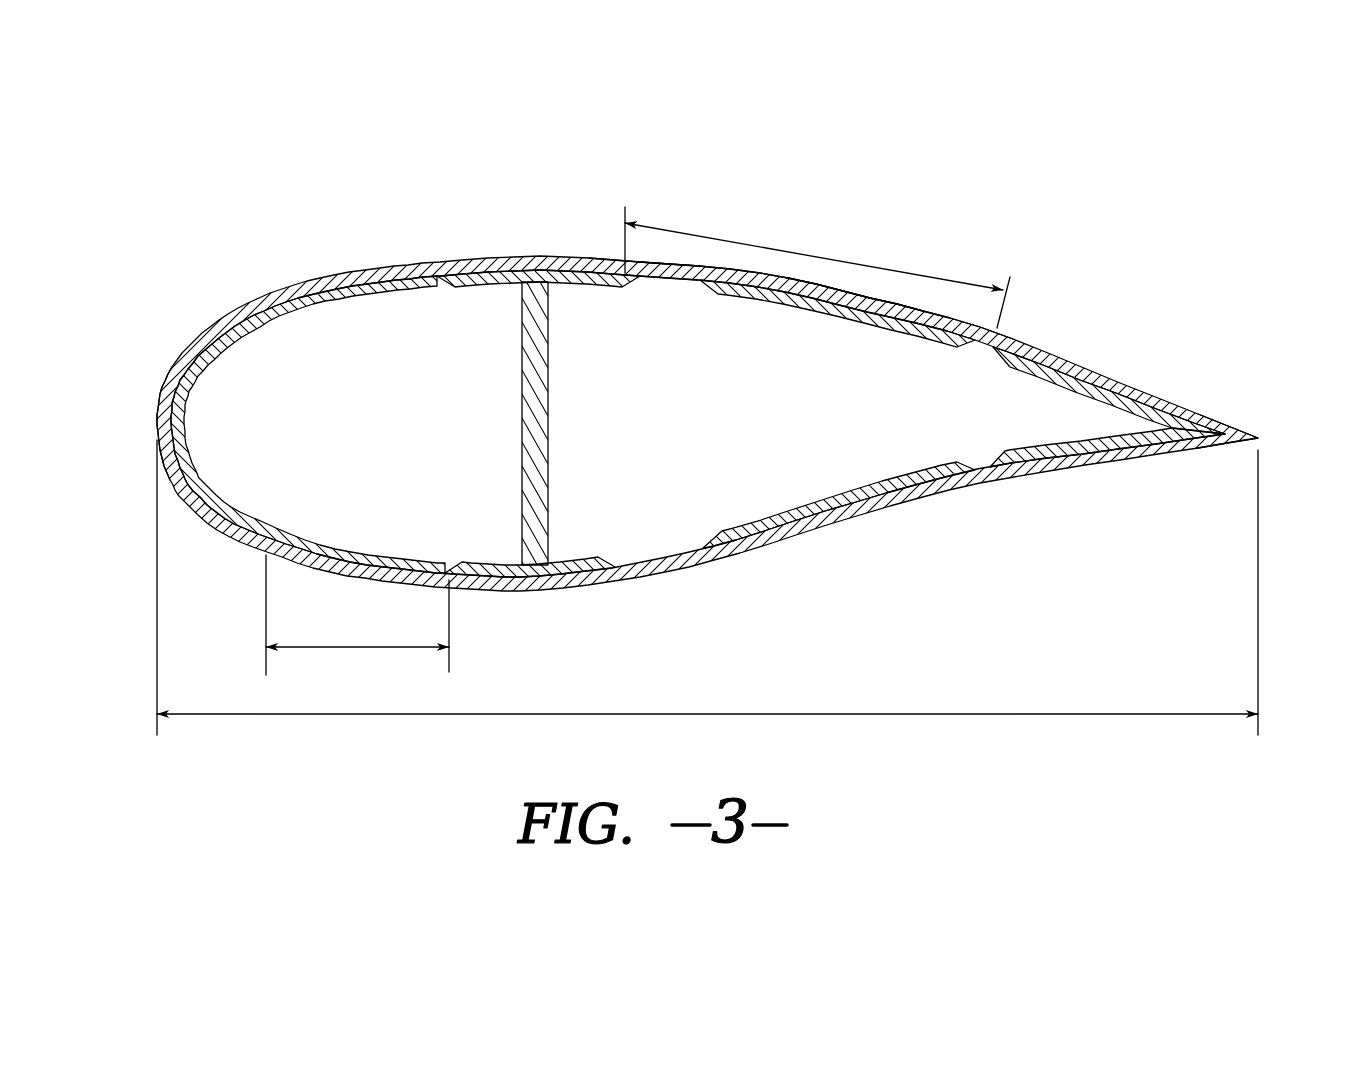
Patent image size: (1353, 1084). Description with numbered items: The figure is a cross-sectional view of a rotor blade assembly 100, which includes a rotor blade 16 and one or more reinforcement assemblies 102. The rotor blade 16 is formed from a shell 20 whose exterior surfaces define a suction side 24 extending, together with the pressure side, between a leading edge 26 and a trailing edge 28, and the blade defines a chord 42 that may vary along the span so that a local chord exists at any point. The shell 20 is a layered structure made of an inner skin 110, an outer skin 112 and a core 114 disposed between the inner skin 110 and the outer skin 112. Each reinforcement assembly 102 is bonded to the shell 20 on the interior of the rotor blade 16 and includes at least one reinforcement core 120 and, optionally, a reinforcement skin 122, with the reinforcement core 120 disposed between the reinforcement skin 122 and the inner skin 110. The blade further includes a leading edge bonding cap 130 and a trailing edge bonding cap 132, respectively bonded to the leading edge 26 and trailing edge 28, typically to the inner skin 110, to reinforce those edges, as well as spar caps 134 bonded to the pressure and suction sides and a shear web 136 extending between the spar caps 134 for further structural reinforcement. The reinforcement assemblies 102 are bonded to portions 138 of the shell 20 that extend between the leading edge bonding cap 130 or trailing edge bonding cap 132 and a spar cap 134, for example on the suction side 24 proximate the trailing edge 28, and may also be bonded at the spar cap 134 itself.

The rotor blade 16 is at (352, 260).
The shell 20 is at (262, 312).
The suction side 24 is at (693, 257).
The leading edge 26 is at (128, 413).
The trailing edge 28 is at (1272, 437).
The chord 42 is at (980, 714).
The rotor blade assembly 100 is at (1097, 265).
The reinforcement assembly 102 is at (350, 318).
The inner skin 110 is at (667, 283).
The outer skin 112 is at (655, 263).
The core 114 is at (620, 263).
The reinforcement core 120 is at (850, 312).
The reinforcement skin 122 is at (887, 323).
The leading edge bonding cap 130 is at (192, 412).
The trailing edge bonding cap 132 is at (1053, 373).
The spar cap 134 is at (495, 287).
The shear web 136 is at (537, 448).
The portion 138 is at (927, 268).